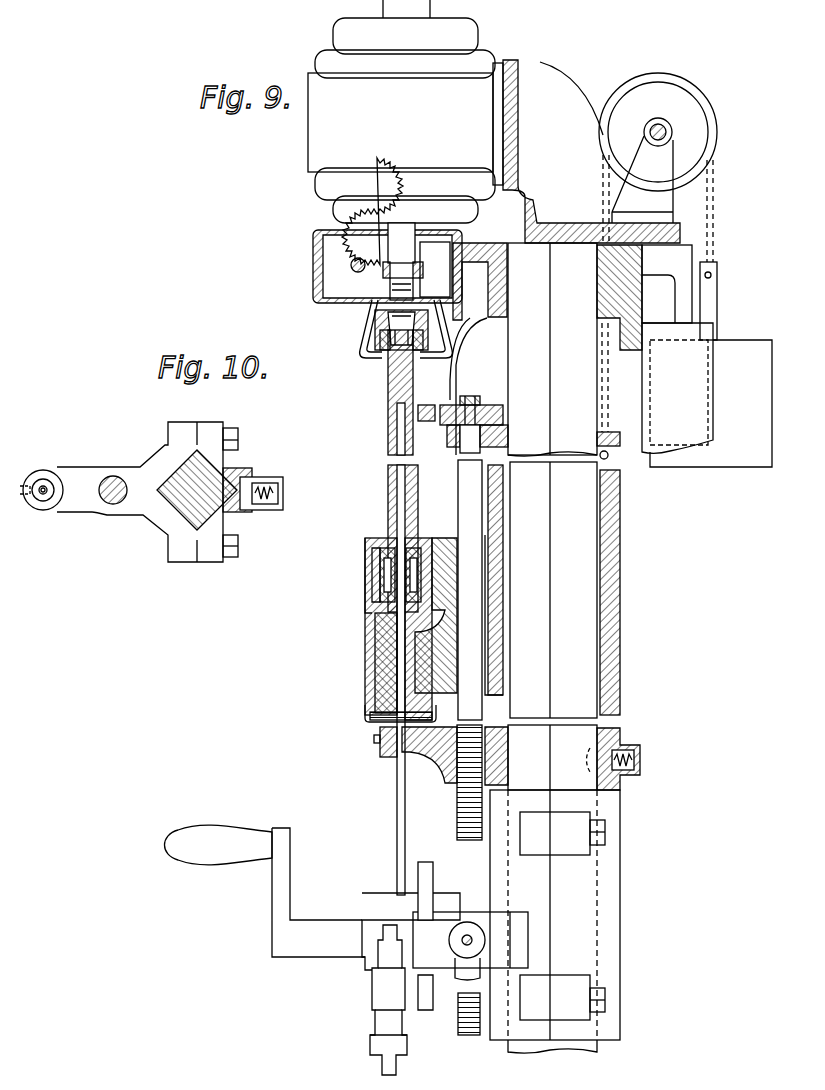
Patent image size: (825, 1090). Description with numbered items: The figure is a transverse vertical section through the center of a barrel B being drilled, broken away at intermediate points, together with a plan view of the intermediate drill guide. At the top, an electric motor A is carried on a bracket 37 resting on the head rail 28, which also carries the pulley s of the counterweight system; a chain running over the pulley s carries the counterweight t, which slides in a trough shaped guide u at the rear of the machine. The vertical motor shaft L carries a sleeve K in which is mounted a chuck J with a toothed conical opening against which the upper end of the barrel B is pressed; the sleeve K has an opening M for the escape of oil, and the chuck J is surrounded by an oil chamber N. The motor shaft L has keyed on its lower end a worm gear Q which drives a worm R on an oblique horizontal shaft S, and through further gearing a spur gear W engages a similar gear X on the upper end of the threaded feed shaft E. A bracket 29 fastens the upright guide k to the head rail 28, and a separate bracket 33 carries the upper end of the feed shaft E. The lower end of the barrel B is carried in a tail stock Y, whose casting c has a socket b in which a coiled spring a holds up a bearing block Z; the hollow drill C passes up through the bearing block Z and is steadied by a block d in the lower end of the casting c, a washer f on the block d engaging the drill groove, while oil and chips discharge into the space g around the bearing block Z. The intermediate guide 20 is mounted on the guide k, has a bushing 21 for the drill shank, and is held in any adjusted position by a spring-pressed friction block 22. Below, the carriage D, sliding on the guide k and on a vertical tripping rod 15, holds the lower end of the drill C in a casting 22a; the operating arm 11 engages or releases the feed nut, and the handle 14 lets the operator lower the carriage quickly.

In FIG. 9, the electric motor A is at (405, 111).
In FIG. 9, the bracket 37 is at (546, 222).
In FIG. 9, the pulley s is at (712, 138).
In FIG. 9, the bracket 29 is at (498, 285).
In FIG. 9, the head rail 28 is at (605, 285).
In FIG. 9, the upright guide k is at (552, 480).
In FIG. 10, the upright guide k is at (172, 472).
In FIG. 9, the counterweight t is at (711, 403).
In FIG. 9, the trough shaped guide u is at (677, 388).
In FIG. 9, the worm R is at (335, 255).
In FIG. 9, the oblique horizontal shaft S is at (350, 267).
In FIG. 9, the motor shaft L is at (401, 243).
In FIG. 9, the worm gear Q is at (416, 269).
In FIG. 9, the opening M is at (385, 292).
In FIG. 9, the chuck J is at (377, 325).
In FIG. 9, the sleeve K is at (378, 338).
In FIG. 9, the oil chamber N is at (364, 358).
In FIG. 9, the barrel B is at (390, 432).
In FIG. 9, the drill C is at (397, 407).
In FIG. 10, the drill C is at (43, 478).
In FIG. 9, the spur gear W is at (429, 435).
In FIG. 9, the spur gear X is at (493, 405).
In FIG. 9, the bracket 33 is at (507, 440).
In FIG. 9, the threaded feed shaft E is at (458, 505).
In FIG. 10, the threaded feed shaft E is at (108, 479).
In FIG. 9, the tail stock Y is at (372, 655).
In FIG. 9, the block d is at (378, 688).
In FIG. 9, the socket b is at (382, 557).
In FIG. 9, the bearing block Z is at (384, 574).
In FIG. 9, the coiled spring a is at (376, 590).
In FIG. 9, the casting c is at (368, 605).
In FIG. 9, the space g is at (380, 660).
In FIG. 9, the washer f is at (375, 720).
In FIG. 9, the bushing 21 is at (392, 756).
In FIG. 10, the bushing 21 is at (46, 502).
In FIG. 9, the intermediate guide 20 is at (447, 770).
In FIG. 10, the intermediate guide 20 is at (150, 520).
In FIG. 9, the friction block 22 is at (625, 745).
In FIG. 10, the friction block 22 is at (258, 480).
In FIG. 9, the handle 14 is at (265, 891).
In FIG. 9, the carriage D is at (421, 918).
In FIG. 9, the tripping rod 15 is at (433, 880).
In FIG. 9, the operating arm 11 is at (458, 960).
In FIG. 9, the casting 22a is at (385, 1003).